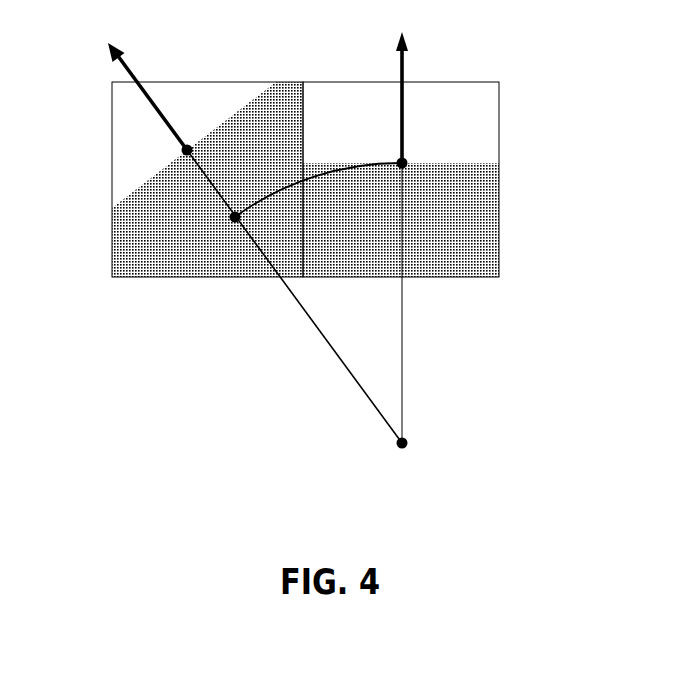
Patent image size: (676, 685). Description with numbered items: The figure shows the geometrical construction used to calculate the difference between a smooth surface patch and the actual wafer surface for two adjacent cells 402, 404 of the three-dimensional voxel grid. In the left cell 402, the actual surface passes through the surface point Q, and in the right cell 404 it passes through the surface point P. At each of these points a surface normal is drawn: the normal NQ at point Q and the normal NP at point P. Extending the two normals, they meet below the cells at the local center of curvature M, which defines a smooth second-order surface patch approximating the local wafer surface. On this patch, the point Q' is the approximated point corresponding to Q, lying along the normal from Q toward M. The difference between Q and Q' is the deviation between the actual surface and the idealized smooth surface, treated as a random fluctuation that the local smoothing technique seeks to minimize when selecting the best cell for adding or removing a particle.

The cell 402 is at (112, 254).
The cell 404 is at (500, 254).
The actual surface point Q is at (163, 170).
The approximated point of the smooth surface patch Q' is at (209, 233).
The actual surface point P is at (428, 165).
The local center of curvature M is at (429, 445).
The surface normal NQ is at (149, 86).
The surface normal NP is at (435, 95).